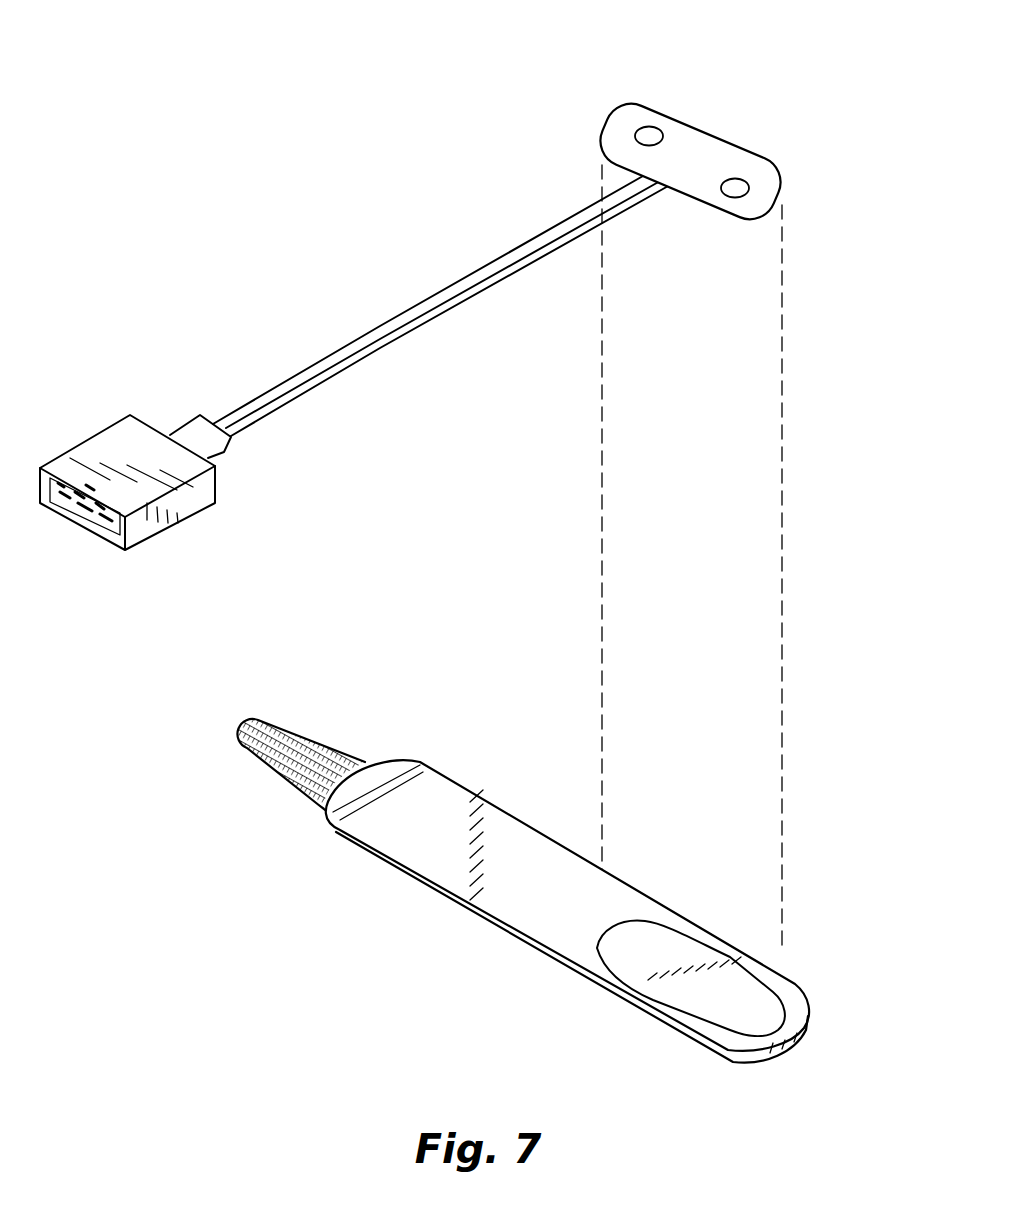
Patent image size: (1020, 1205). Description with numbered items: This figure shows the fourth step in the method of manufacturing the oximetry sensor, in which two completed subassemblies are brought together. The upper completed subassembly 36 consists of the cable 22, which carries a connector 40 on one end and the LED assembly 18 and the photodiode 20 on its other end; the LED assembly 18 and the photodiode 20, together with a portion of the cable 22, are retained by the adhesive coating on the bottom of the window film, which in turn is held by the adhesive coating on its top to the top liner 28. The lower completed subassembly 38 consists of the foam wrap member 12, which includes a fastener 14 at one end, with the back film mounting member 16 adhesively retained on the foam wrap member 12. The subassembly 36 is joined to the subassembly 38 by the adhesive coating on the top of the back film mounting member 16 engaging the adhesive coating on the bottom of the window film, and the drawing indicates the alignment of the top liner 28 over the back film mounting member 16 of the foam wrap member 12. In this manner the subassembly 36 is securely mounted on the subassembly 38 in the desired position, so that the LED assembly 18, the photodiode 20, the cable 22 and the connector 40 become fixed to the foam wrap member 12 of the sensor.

The foam wrap member 12 is at (515, 843).
The fastener 14 is at (340, 745).
The back film mounting member 16 is at (747, 1003).
The LED assembly 18 is at (648, 134).
The photodiode 20 is at (738, 186).
The cable 22 is at (410, 328).
The top liner 28 is at (705, 150).
The completed subassembly 36 is at (393, 215).
The completed subassembly 38 is at (337, 895).
The connector 40 is at (187, 498).